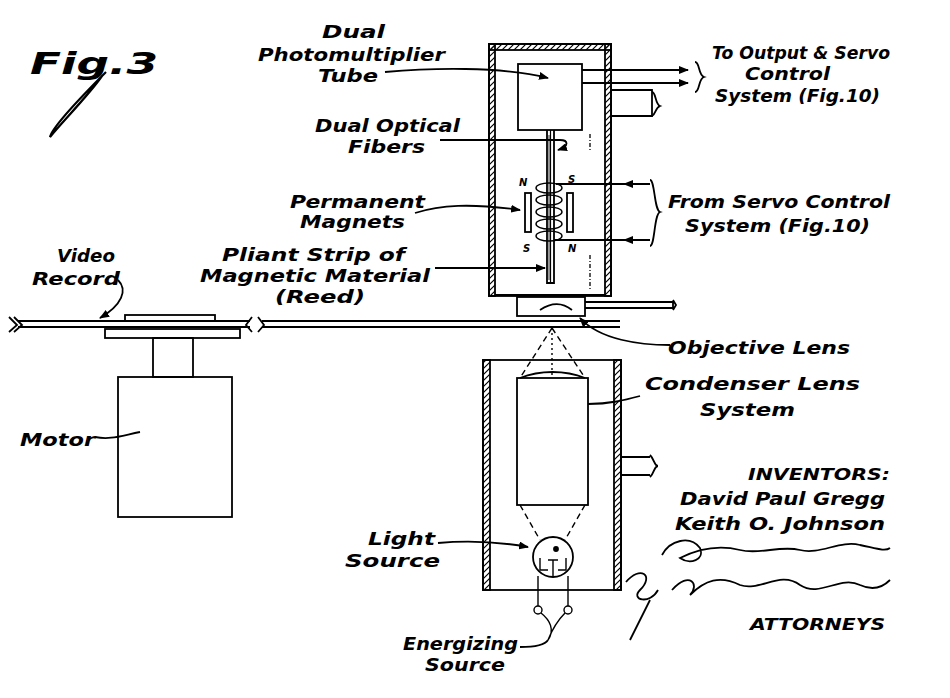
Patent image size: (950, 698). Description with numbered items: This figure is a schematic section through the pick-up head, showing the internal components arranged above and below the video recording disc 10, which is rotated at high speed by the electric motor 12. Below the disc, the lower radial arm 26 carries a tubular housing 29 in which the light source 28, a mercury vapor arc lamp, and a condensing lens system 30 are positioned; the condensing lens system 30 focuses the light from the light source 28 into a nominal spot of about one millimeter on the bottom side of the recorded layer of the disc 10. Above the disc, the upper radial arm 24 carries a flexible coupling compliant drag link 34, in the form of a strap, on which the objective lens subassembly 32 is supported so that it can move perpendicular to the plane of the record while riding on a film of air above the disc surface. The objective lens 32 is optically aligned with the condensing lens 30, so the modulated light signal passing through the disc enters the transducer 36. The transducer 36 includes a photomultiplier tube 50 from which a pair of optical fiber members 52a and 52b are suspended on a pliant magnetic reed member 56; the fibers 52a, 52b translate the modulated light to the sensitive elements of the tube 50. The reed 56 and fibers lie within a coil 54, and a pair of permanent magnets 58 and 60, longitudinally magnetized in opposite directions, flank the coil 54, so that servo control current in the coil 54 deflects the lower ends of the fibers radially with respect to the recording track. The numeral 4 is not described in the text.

The recording medium 10 is at (418, 328).
The electric motor 12 is at (200, 462).
The upper radial arm 24 is at (640, 107).
The lower radial arm 26 is at (638, 456).
The light source 28 is at (532, 566).
The tubular housing 29 is at (483, 470).
The condensing lens system 30 is at (530, 395).
The objective lens subassembly 32 is at (520, 330).
The flexible coupling compliant drag link 34 is at (670, 330).
The transducer 36 is at (490, 86).
The housing wall 4 is at (592, 134).
The photomultiplier tube 50 is at (558, 78).
The optical fiber member 52a is at (566, 150).
The optical fiber member 52b is at (552, 280).
The coil 54 is at (565, 202).
The pliant magnetic reed member 56 is at (520, 278).
The permanent magnet 58 is at (522, 226).
The permanent magnet 60 is at (574, 222).